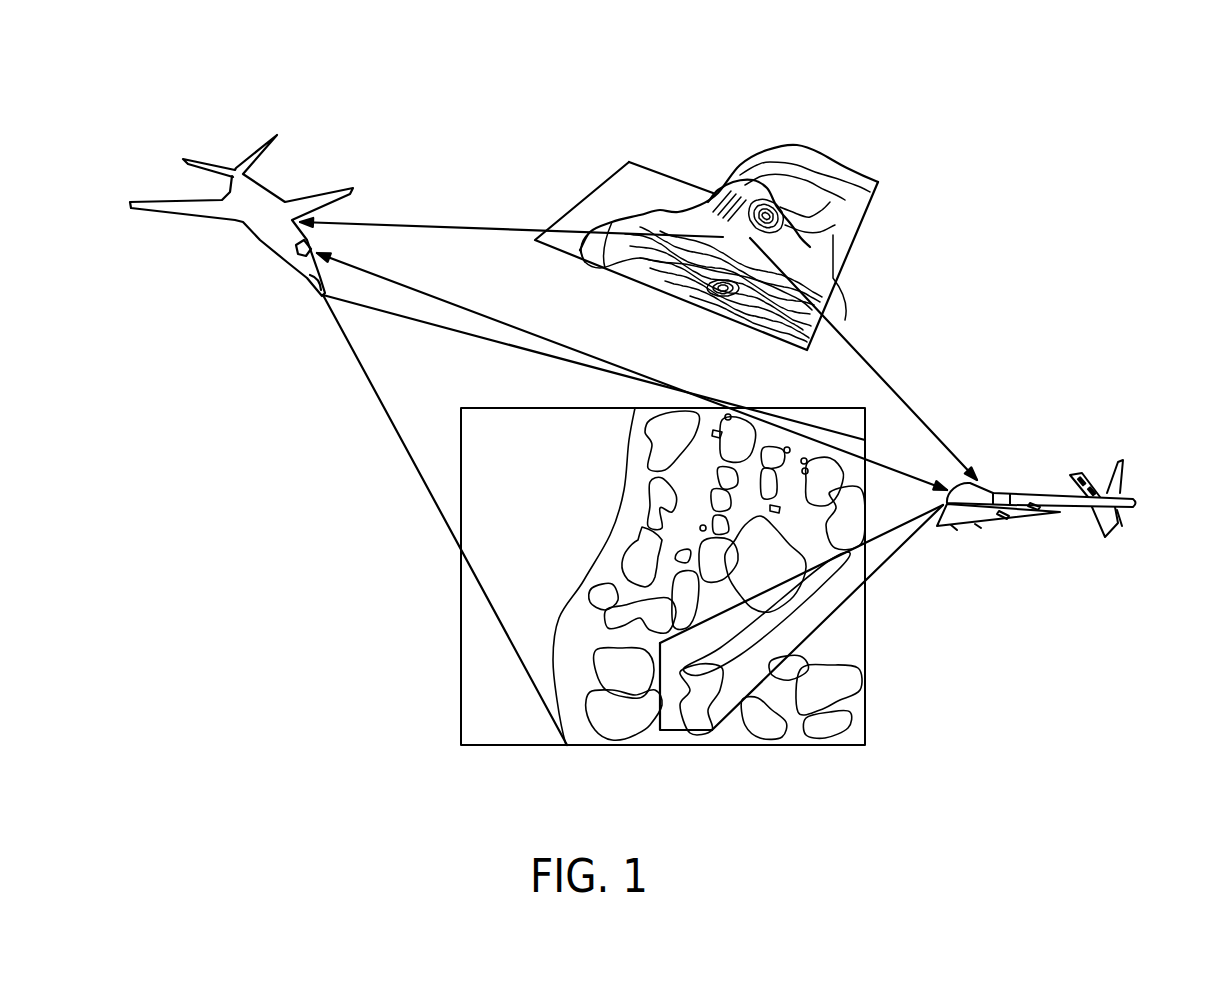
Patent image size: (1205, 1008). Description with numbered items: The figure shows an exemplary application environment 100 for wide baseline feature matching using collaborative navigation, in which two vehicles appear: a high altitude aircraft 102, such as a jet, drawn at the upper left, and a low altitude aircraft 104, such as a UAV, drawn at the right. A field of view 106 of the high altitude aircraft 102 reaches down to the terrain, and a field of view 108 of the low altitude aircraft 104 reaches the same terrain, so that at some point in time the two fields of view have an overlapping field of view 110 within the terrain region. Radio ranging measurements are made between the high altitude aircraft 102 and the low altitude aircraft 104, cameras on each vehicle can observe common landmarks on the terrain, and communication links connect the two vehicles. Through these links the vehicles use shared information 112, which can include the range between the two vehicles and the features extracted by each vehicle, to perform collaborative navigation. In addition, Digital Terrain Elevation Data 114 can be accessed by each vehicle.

The application environment 100 is at (850, 97).
The high altitude aircraft 102 is at (277, 257).
The low altitude aircraft 104 is at (1063, 513).
The field of view 106 is at (343, 368).
The field of view 108 is at (895, 565).
The overlapping field of view 110 is at (673, 702).
The shared information 112 is at (545, 335).
The Digital Terrain Elevation Data (DTED) 114 is at (714, 165).